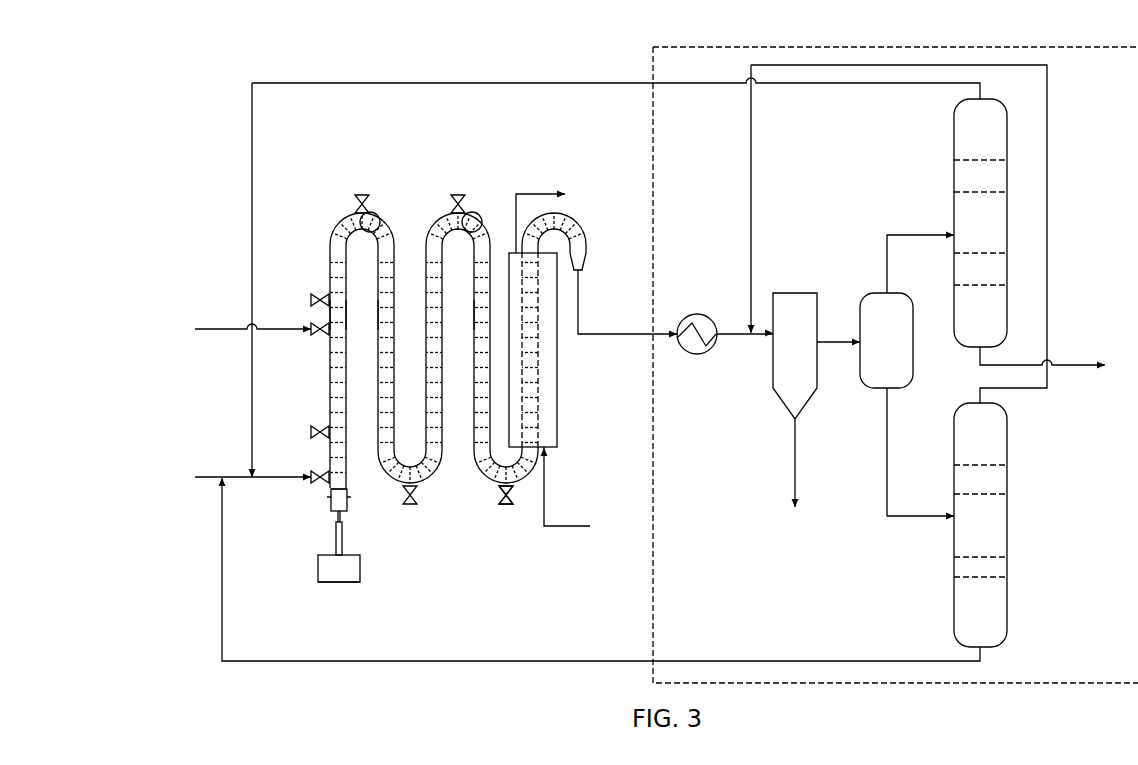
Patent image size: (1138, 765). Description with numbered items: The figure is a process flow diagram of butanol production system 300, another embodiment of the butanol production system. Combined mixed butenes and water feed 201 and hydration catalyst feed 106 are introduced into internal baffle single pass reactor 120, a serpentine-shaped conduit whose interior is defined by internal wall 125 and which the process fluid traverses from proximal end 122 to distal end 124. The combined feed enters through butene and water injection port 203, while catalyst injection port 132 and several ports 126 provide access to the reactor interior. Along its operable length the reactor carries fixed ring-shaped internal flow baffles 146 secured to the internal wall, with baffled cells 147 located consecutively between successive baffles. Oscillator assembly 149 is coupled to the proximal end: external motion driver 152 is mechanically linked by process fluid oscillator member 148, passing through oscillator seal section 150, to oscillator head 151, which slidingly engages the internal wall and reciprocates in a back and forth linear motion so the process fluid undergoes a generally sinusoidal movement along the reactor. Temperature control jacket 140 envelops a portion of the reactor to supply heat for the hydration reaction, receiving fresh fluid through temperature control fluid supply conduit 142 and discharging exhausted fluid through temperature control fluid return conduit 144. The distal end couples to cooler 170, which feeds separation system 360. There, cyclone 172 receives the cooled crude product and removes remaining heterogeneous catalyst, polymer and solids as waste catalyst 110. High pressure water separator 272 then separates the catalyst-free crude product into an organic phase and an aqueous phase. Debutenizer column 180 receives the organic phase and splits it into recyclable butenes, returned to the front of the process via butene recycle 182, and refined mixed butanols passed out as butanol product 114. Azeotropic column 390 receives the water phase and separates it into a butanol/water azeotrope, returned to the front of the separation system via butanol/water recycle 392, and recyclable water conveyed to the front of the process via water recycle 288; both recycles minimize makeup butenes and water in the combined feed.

The butanol production system 300 is at (265, 58).
The butene recycle 182 is at (492, 83).
The butanol/water recycle 392 is at (868, 84).
The separation system 360 is at (1036, 682).
The hydration catalyst feed 106 is at (232, 331).
The combined mixed butenes and water feed 201 is at (216, 476).
The water recycle 288 is at (572, 661).
The internal baffle single pass reactor 120 is at (345, 222).
The internal wall 125 is at (332, 256).
The baffled cells 147 is at (377, 215).
The internal flow baffles 146 is at (388, 265).
The ports 126 is at (318, 298).
The catalyst injection port 132 is at (325, 336).
The butene and water injection port 203 is at (322, 470).
The oscillator head 151 is at (331, 493).
The proximal end 122 is at (337, 515).
The process fluid oscillator member 148 is at (337, 540).
The external motion driver 152 is at (318, 570).
The oscillator seal section 150 is at (350, 505).
The oscillator assembly 149 is at (374, 573).
The temperature control fluid return conduit 144 is at (537, 193).
The temperature control fluid supply conduit 142 is at (566, 526).
The temperature control jacket 140 is at (562, 372).
The distal end 124 is at (580, 278).
The cooler 170 is at (700, 355).
The cyclone 172 is at (812, 352).
The waste catalyst 110 is at (795, 462).
The high pressure water separator 272 is at (904, 352).
The debutenizer column 180 is at (997, 232).
The azeotropic column 390 is at (997, 534).
The butanol product 114 is at (1082, 366).